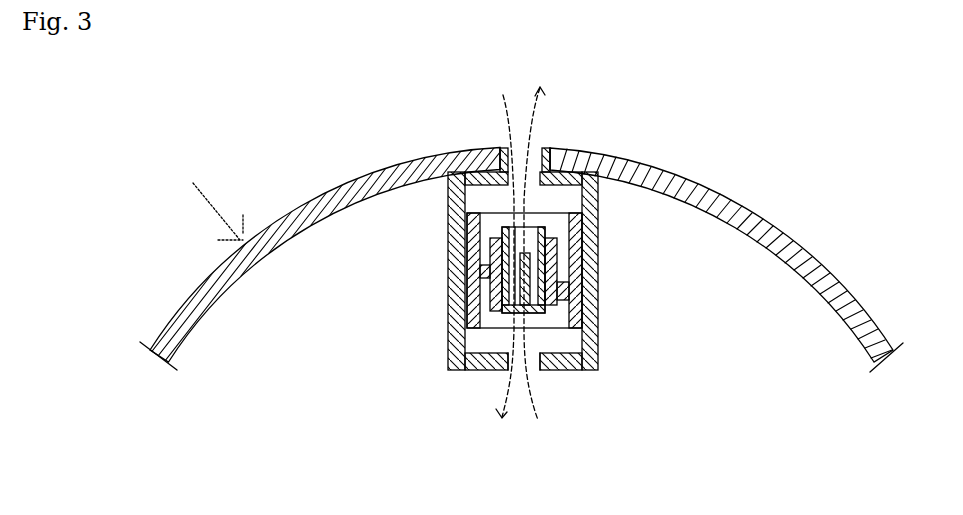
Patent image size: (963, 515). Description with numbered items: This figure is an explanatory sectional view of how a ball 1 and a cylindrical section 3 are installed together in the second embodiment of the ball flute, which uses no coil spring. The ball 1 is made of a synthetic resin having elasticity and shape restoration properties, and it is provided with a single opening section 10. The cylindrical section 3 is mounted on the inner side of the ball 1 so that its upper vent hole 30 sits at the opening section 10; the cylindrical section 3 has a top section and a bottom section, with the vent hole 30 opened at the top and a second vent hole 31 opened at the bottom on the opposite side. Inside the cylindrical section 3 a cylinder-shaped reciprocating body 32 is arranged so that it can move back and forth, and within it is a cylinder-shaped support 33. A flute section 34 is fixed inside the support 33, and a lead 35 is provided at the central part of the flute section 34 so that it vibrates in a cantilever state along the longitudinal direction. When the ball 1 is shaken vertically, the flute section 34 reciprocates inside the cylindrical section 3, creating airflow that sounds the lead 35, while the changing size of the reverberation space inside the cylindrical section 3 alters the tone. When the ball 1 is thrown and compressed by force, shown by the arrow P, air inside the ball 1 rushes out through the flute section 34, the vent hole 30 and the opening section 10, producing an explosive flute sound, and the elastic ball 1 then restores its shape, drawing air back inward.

The ball 1 is at (772, 225).
The arrow indicating compression force P is at (240, 240).
The opening section 10 is at (505, 158).
The vent hole 30 is at (563, 163).
The cylindrical section 3 is at (600, 230).
The vent hole 31 is at (543, 370).
The reciprocating body 32 is at (467, 226).
The support 33 is at (492, 282).
The flute section 34 is at (465, 370).
The lead 35 is at (560, 300).